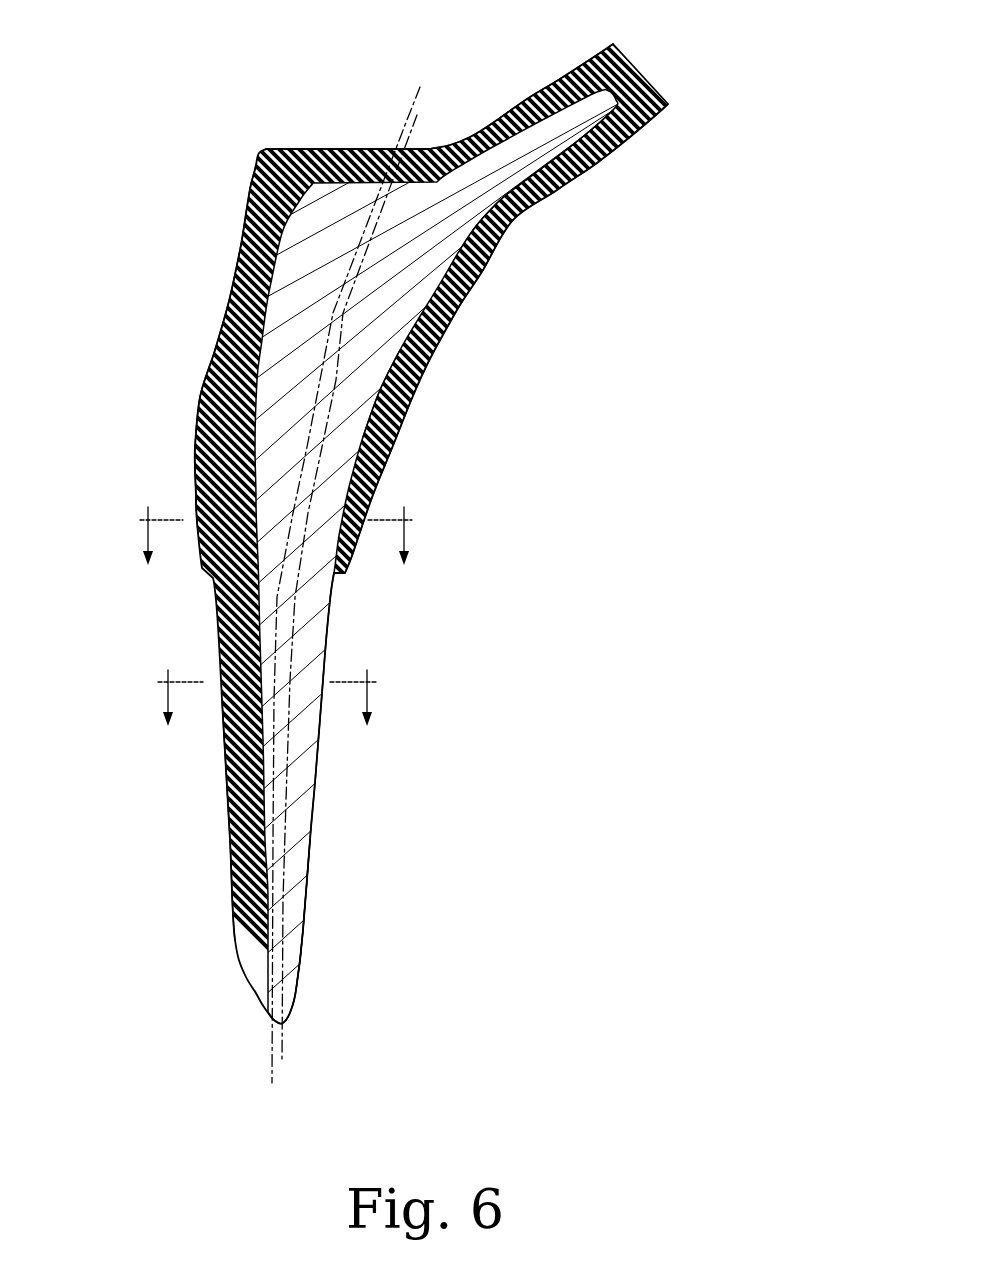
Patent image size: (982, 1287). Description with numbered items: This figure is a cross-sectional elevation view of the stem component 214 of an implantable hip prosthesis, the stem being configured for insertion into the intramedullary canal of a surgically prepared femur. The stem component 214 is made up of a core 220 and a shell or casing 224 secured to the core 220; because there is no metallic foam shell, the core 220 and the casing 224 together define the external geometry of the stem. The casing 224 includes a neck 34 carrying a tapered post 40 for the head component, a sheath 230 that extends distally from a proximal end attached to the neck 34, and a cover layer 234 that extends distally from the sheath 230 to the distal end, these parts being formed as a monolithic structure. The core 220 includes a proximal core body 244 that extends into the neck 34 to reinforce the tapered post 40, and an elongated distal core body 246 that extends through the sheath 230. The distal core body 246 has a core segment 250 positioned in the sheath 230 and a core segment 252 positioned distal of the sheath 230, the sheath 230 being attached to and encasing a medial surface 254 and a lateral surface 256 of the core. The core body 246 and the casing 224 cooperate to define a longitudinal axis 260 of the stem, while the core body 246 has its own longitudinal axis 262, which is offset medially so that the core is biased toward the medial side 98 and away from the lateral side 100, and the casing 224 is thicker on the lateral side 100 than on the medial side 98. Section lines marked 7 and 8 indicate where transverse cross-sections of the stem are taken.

The lateral side 100 is at (154, 269).
The elongated stem component 214 is at (704, 72).
The tapered post 40 is at (562, 84).
The neck 34 is at (610, 155).
The proximal core body 244 is at (534, 174).
The medial side 98 is at (545, 279).
The sheath 230 is at (255, 207).
The lateral surface 256 is at (222, 319).
The casing 224 is at (200, 398).
The cover layer 234 is at (227, 817).
The core segment 250 is at (380, 342).
The medial surface 254 is at (397, 400).
The elongated distal core body 246 is at (368, 470).
The core 220 is at (307, 638).
The core segment 252 is at (300, 823).
The longitudinal axis of the stem component 260 is at (412, 97).
The longitudinal axis of the core body 262 is at (413, 128).
The section line 7- 7 is at (276, 552).
The section line 8- 8 is at (267, 713).